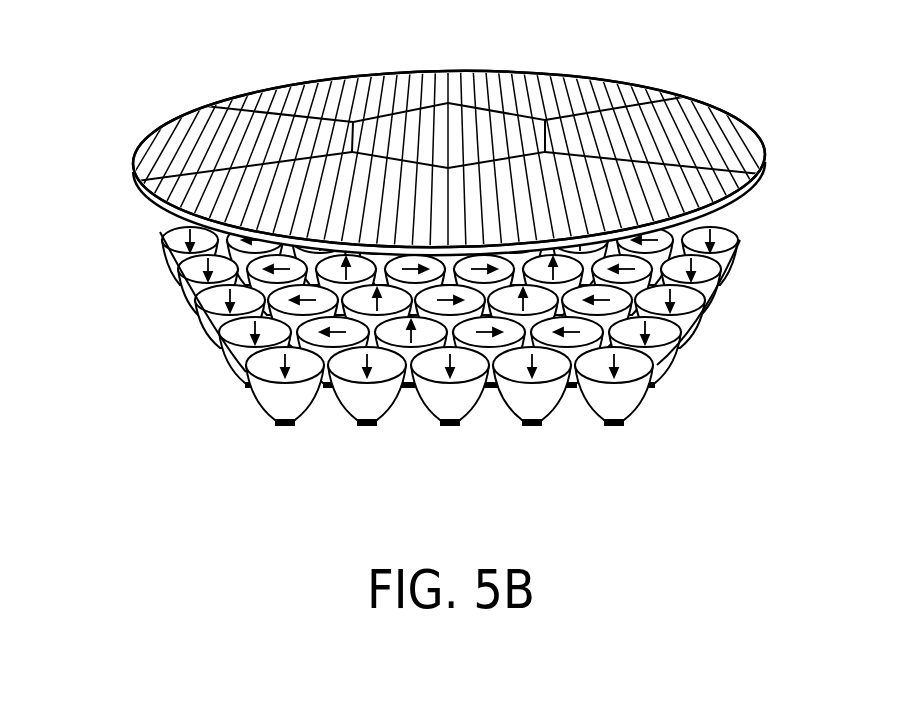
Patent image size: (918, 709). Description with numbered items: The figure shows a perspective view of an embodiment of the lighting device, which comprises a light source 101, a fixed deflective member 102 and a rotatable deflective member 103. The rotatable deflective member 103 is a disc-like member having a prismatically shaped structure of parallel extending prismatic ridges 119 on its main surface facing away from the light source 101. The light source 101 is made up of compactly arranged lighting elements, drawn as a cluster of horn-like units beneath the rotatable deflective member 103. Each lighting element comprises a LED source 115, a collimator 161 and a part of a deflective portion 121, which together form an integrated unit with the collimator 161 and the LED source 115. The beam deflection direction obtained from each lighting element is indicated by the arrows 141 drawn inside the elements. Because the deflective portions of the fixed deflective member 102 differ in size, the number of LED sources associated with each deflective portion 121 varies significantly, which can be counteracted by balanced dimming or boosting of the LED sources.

The light source 101 is at (180, 302).
The fixed deflective member 102 is at (193, 272).
The rotatable deflective member 103 is at (132, 163).
The LED source 115 is at (611, 427).
The prismatic ridges 119 is at (538, 88).
The deflective portion 121 is at (632, 372).
The arrows 141 is at (636, 349).
The collimator 161 is at (636, 407).